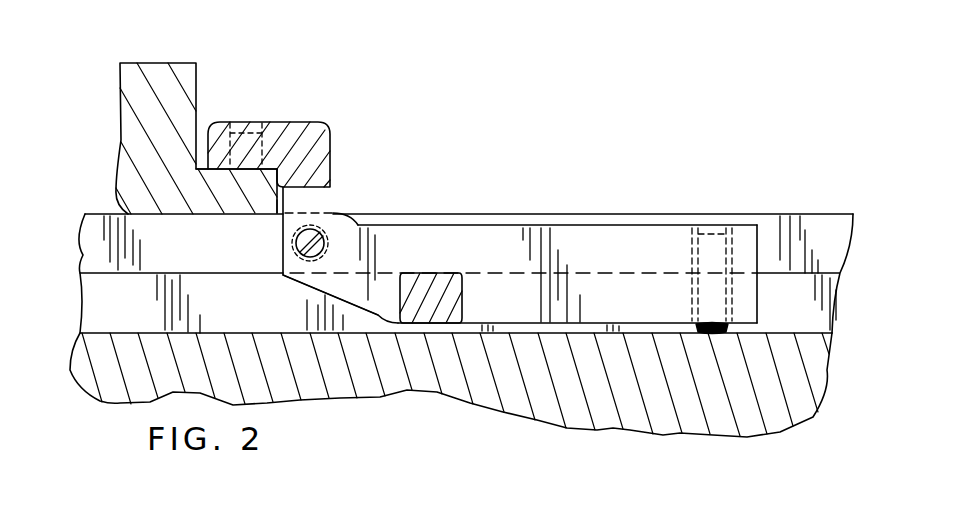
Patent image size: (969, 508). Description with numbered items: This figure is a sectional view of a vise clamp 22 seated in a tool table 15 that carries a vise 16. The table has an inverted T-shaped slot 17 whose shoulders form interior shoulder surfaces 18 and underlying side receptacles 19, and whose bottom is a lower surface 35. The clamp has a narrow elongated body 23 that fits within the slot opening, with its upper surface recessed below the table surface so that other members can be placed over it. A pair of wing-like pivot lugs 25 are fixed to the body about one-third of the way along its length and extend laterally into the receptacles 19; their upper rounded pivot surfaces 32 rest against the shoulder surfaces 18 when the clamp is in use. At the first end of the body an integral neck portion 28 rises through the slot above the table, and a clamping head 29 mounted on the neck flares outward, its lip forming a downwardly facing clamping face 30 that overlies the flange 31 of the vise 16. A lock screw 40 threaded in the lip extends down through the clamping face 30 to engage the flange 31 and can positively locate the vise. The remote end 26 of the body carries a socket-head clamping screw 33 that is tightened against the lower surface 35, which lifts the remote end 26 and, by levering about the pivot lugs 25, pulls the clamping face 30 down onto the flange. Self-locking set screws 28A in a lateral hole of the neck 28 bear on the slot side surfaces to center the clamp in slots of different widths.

The tool table 15 is at (823, 230).
The vise 16 is at (152, 72).
The slot 17 is at (92, 254).
The interior shoulder surface 18 is at (95, 297).
The side receptacle 19 is at (120, 318).
The vise clamp 22 is at (533, 299).
The elongated body 23 is at (512, 240).
The pivot lug 25 is at (443, 283).
The remote end 26 is at (732, 297).
The neck portion 28 is at (318, 198).
The self-locking set screw 28A is at (327, 250).
The clamping head 29 is at (290, 133).
The clamping face 30 is at (236, 216).
The flange 31 is at (245, 207).
The pivot surface 32 is at (452, 283).
The clamping screw 33 is at (712, 335).
The lower surface 35 is at (807, 330).
The lock screw 40 is at (212, 120).